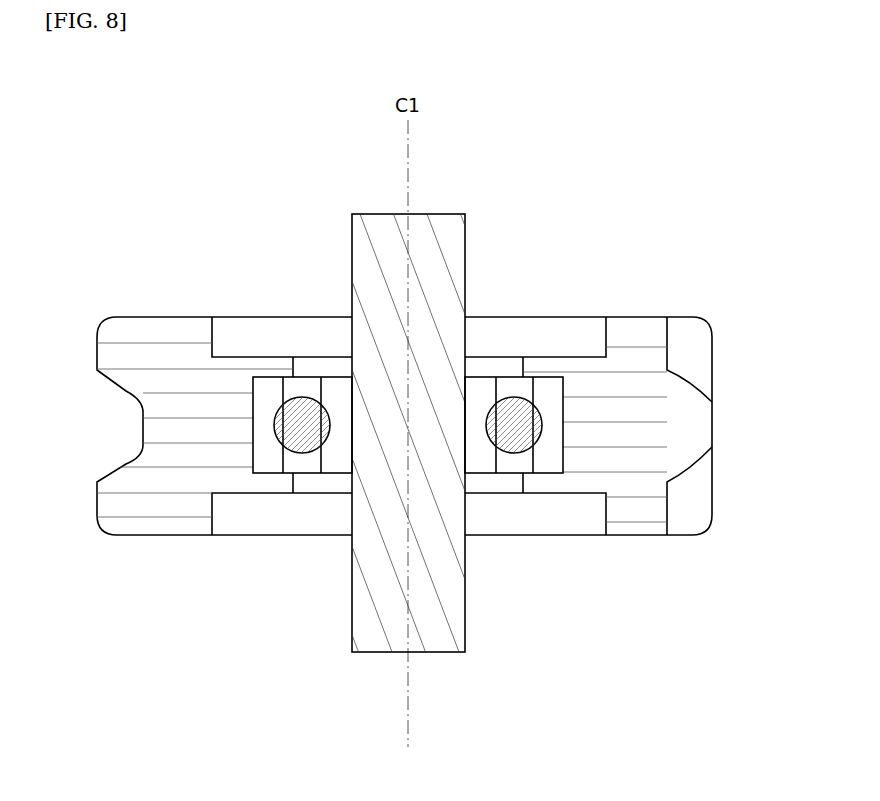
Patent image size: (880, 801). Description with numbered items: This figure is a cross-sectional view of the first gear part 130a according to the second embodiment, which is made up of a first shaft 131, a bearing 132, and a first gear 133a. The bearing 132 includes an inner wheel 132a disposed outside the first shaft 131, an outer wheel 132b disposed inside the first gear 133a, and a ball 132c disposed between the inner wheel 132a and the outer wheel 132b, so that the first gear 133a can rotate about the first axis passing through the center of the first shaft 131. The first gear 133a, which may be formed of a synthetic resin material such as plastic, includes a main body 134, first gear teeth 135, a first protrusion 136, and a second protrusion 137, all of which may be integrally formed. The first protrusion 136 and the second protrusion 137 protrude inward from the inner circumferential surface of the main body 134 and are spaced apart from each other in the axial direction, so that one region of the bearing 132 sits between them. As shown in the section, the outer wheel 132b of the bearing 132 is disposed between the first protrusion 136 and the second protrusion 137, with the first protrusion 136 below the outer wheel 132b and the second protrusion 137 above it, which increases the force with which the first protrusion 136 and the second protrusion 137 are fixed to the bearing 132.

The first gear part 130a is at (103, 175).
The first shaft 131 is at (455, 253).
The bearing 132 is at (360, 333).
The inner wheel 132a is at (335, 391).
The outer wheel 132b is at (265, 397).
The ball 132c is at (303, 412).
The first gear 133a is at (620, 480).
The main body 134 is at (640, 422).
The first gear teeth 135 is at (698, 422).
The first protrusion 136 is at (564, 540).
The second protrusion 137 is at (548, 370).